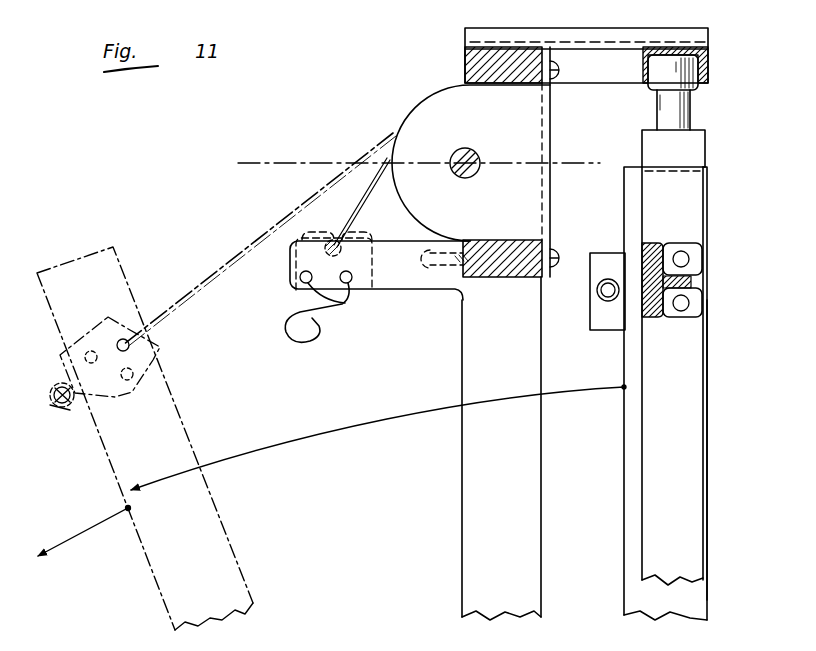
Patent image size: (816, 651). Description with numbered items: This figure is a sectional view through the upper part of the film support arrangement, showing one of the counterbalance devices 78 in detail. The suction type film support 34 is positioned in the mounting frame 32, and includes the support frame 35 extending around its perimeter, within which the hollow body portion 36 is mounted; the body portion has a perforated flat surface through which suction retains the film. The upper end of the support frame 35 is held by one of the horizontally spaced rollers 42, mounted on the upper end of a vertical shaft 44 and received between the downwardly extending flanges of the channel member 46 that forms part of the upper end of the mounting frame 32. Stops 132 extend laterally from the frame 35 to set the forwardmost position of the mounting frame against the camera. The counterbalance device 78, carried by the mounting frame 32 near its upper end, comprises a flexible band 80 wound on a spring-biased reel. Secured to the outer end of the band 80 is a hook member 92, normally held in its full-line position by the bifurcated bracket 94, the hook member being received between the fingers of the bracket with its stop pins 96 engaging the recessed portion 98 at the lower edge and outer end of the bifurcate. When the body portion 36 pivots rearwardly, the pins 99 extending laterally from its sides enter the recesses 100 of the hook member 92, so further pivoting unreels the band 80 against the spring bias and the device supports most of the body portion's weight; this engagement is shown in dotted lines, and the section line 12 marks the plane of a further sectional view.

The section line 12- 12 is at (262, 158).
The mounting frame 32 is at (462, 60).
The suction type film support 34 is at (710, 592).
The support frame 35 is at (690, 397).
The hollow body portion 36 is at (621, 433).
The rollers 42 is at (700, 75).
The vertical shafts 44 is at (690, 112).
The channel member 46 is at (706, 58).
The counterbalance device 78 is at (386, 110).
The flexible band 80 is at (240, 251).
The hook member 92 is at (130, 393).
The bifurcated bracket 94 is at (403, 290).
The stop pins 96 is at (345, 285).
The recessed portion 98 is at (300, 268).
The pins 99 is at (58, 410).
The recesses 100 is at (318, 332).
The stops 132 is at (650, 300).